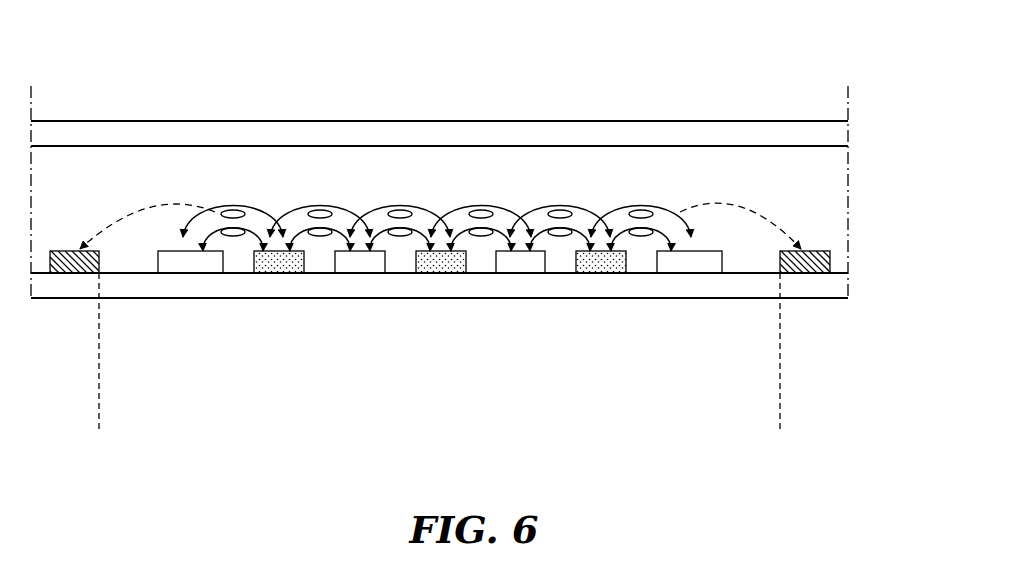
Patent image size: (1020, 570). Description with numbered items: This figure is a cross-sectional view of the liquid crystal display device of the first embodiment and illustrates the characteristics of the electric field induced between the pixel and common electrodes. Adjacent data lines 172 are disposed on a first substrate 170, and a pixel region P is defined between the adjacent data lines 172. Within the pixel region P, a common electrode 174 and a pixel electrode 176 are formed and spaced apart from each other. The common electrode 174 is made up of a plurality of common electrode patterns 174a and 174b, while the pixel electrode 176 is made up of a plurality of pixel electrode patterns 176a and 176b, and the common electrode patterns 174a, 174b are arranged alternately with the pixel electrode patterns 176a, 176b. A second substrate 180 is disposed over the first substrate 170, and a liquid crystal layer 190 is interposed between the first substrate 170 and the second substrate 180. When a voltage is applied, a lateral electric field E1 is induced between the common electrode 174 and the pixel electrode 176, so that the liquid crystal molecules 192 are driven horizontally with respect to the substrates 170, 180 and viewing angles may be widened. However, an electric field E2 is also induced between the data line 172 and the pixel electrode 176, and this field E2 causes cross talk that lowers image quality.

The first substrate 170 is at (838, 288).
The data lines 172 is at (70, 268).
The common electrode 174 is at (440, 326).
The common electrode pattern 174a is at (198, 265).
The common electrode pattern 174b is at (440, 300).
The pixel electrode 176 is at (608, 65).
The pixel electrode pattern 176a is at (442, 262).
The pixel electrode pattern 176b is at (281, 262).
The second substrate 180 is at (838, 135).
The liquid crystal layer 190 is at (838, 205).
The liquid crystal molecules 192 is at (232, 211).
The lateral electric field E1 is at (316, 210).
The electric field E2 is at (152, 208).
The pixel region P is at (780, 422).